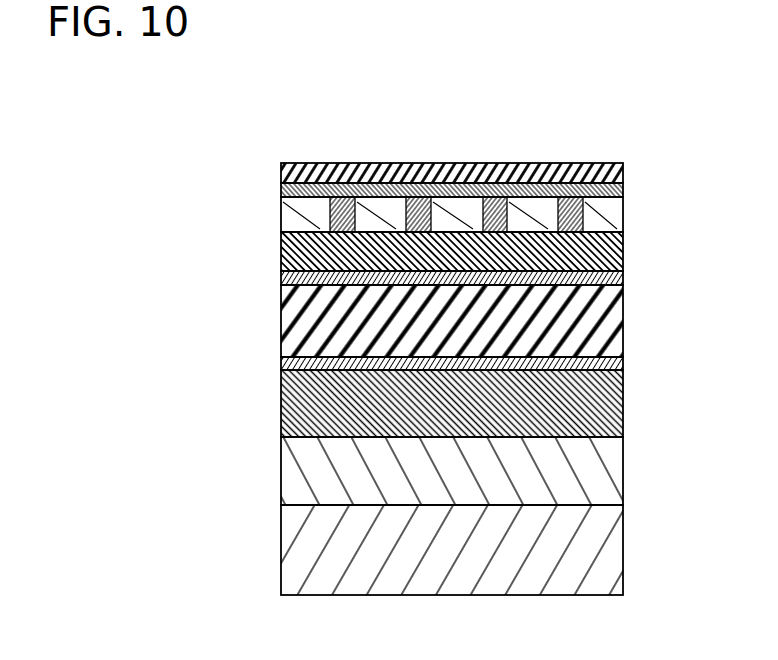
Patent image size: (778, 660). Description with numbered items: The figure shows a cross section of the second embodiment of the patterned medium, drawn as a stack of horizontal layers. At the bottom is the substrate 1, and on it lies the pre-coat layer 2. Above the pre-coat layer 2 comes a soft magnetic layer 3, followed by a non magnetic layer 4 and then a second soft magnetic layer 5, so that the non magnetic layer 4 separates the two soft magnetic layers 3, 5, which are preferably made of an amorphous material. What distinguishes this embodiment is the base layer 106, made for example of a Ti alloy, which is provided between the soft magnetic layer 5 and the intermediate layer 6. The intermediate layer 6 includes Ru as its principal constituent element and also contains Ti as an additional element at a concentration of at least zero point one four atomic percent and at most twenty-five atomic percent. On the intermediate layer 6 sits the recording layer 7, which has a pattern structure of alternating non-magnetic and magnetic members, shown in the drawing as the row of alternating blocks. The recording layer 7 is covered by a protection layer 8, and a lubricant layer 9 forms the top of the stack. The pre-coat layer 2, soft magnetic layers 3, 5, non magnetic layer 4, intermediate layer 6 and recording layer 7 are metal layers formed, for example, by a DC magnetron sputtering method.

The substrate 1 is at (624, 548).
The pre-coat layer 2 is at (624, 472).
The soft magnetic layer 3 is at (624, 412).
The non magnetic layer 4 is at (624, 362).
The soft magnetic layer 5 is at (624, 315).
The intermediate layer 6 is at (624, 252).
The recording layer 7 is at (624, 208).
The protection layer 8 is at (624, 187).
The lubricant layer 9 is at (594, 162).
The base layer 106 is at (281, 276).